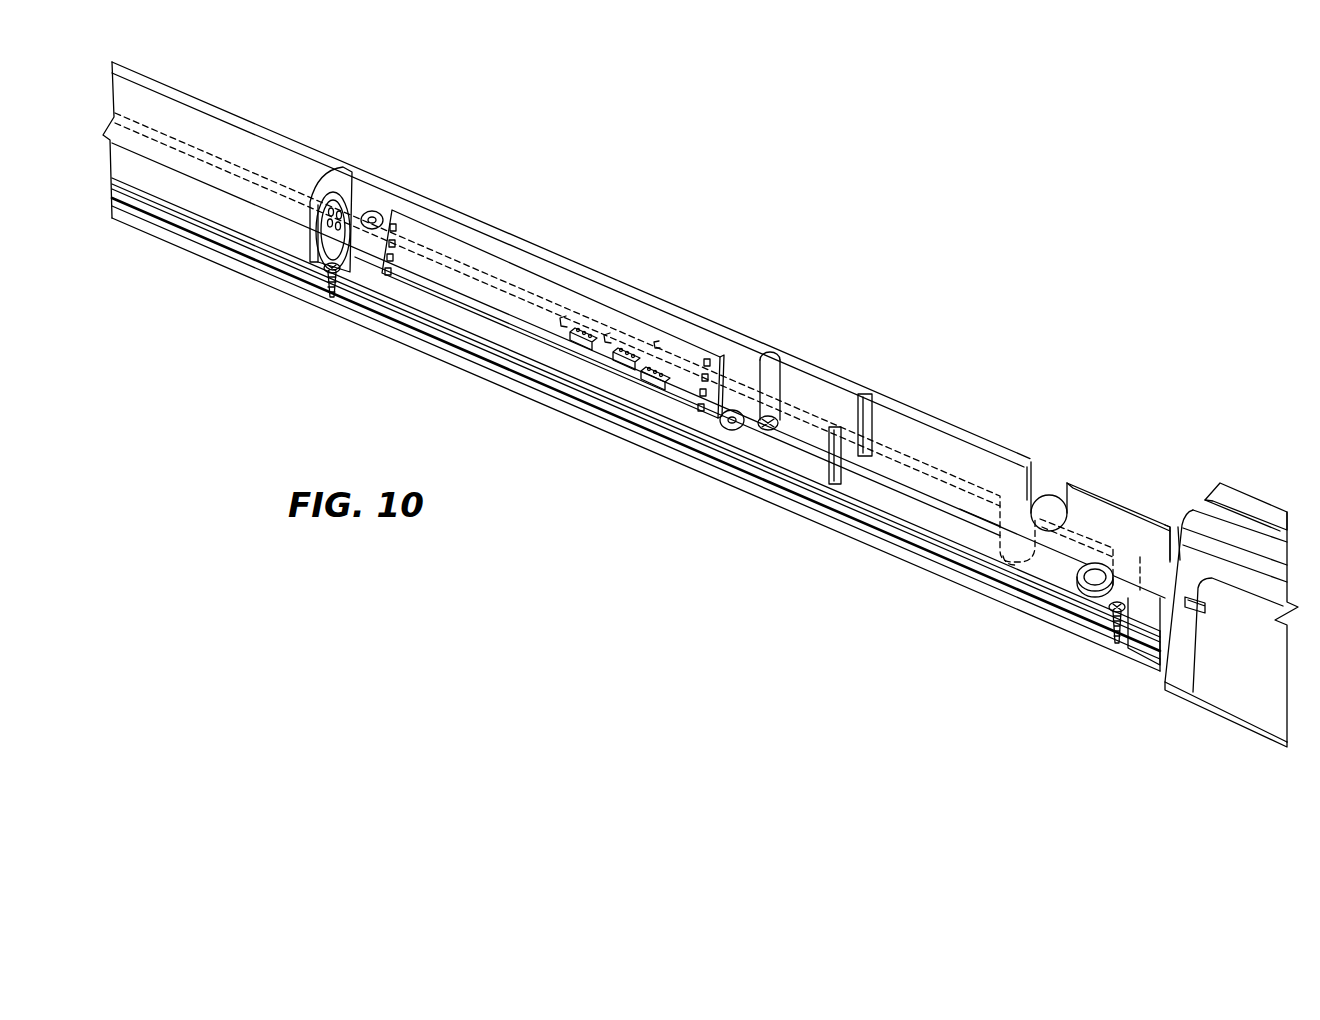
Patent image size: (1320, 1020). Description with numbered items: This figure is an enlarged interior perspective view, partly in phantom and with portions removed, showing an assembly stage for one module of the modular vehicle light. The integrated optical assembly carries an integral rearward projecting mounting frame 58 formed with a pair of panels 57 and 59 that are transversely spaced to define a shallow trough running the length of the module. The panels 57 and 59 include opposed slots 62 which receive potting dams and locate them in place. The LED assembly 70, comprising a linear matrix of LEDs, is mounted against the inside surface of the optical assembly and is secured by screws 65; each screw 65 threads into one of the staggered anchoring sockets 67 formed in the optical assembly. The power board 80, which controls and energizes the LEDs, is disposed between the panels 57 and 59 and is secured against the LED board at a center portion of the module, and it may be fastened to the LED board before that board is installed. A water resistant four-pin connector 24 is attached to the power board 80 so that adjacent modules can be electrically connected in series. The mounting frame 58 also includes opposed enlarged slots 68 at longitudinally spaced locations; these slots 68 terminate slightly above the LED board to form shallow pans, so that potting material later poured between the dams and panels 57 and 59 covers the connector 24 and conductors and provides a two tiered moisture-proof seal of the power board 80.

The four-pin connector 24 is at (350, 197).
The panel 57 is at (972, 500).
The mounting frame 58 is at (637, 283).
The panel 59 is at (968, 457).
The slot 62 is at (838, 428).
The screw 65 is at (333, 266).
The anchoring socket 67 is at (330, 297).
The enlarged slot 68 is at (1022, 558).
The LED assembly 70 is at (755, 438).
The power board 80 is at (693, 352).